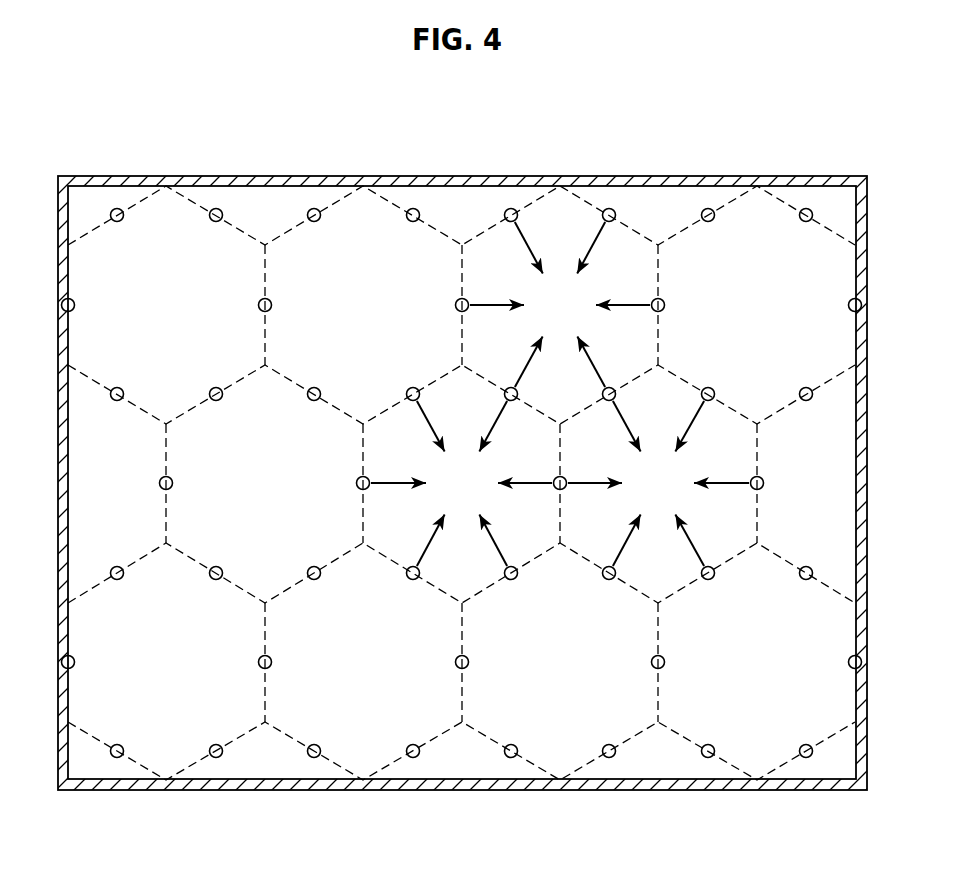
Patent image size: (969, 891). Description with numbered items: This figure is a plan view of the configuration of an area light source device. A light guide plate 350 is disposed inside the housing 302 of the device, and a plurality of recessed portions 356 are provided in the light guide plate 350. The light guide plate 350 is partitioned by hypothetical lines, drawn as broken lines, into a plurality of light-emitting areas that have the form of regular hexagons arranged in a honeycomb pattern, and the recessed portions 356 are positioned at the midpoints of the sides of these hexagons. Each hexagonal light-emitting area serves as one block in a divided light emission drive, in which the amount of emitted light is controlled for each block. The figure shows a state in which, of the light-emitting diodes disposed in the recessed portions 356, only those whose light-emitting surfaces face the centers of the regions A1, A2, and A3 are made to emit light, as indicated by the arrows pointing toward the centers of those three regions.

The housing 302 is at (362, 187).
The light guide plate 350 is at (296, 212).
The recessed portions 356 is at (216, 209).
The region A1 is at (556, 226).
The region A2 is at (447, 402).
The region A3 is at (672, 402).